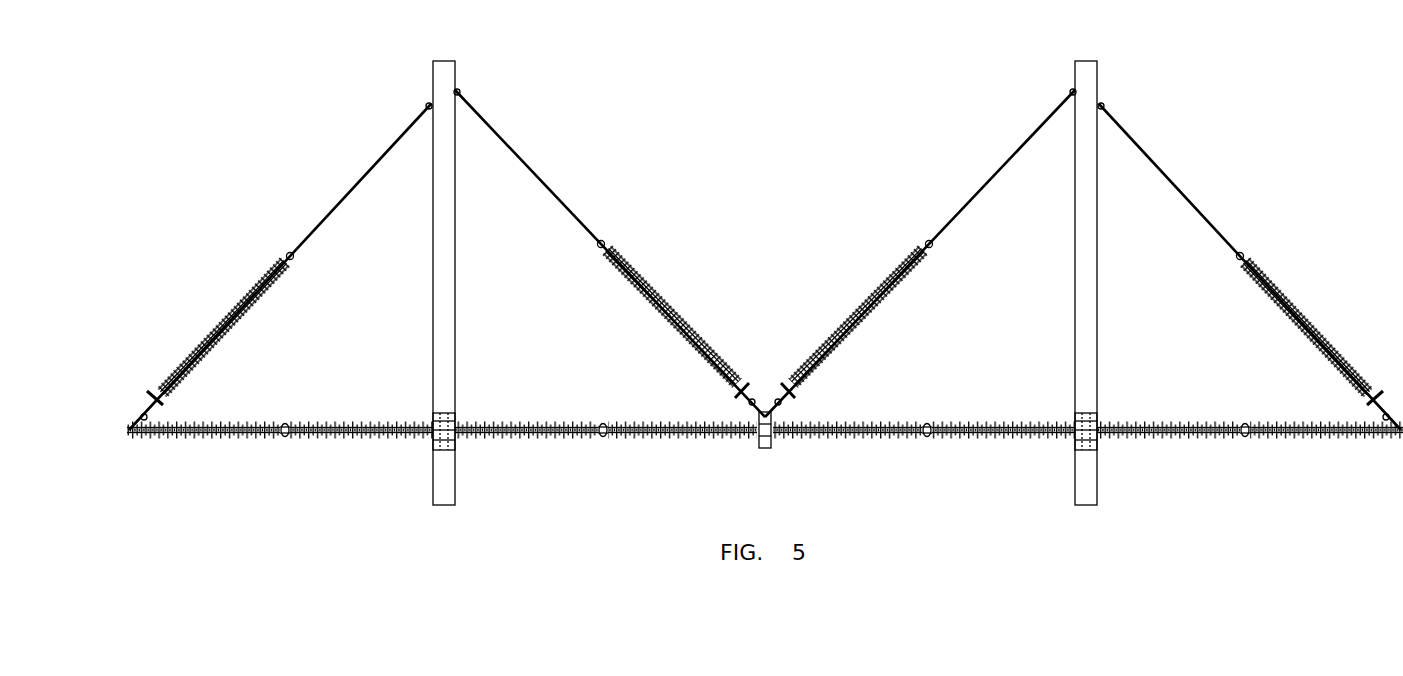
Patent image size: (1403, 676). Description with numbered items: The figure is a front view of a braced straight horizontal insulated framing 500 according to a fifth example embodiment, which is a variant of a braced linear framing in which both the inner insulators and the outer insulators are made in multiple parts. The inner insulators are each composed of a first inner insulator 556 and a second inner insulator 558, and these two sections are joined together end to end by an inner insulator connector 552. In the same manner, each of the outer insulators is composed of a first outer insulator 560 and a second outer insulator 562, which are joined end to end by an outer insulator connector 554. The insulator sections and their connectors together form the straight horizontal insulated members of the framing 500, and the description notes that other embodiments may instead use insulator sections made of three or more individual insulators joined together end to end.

The framing 500 is at (765, 283).
The inner insulator connector 552 is at (607, 468).
The outer insulator connector 554 is at (928, 468).
The first inner insulator 556 is at (765, 403).
The second inner insulator 558 is at (765, 403).
The first outer insulator 560 is at (765, 403).
The second outer insulator 562 is at (765, 403).